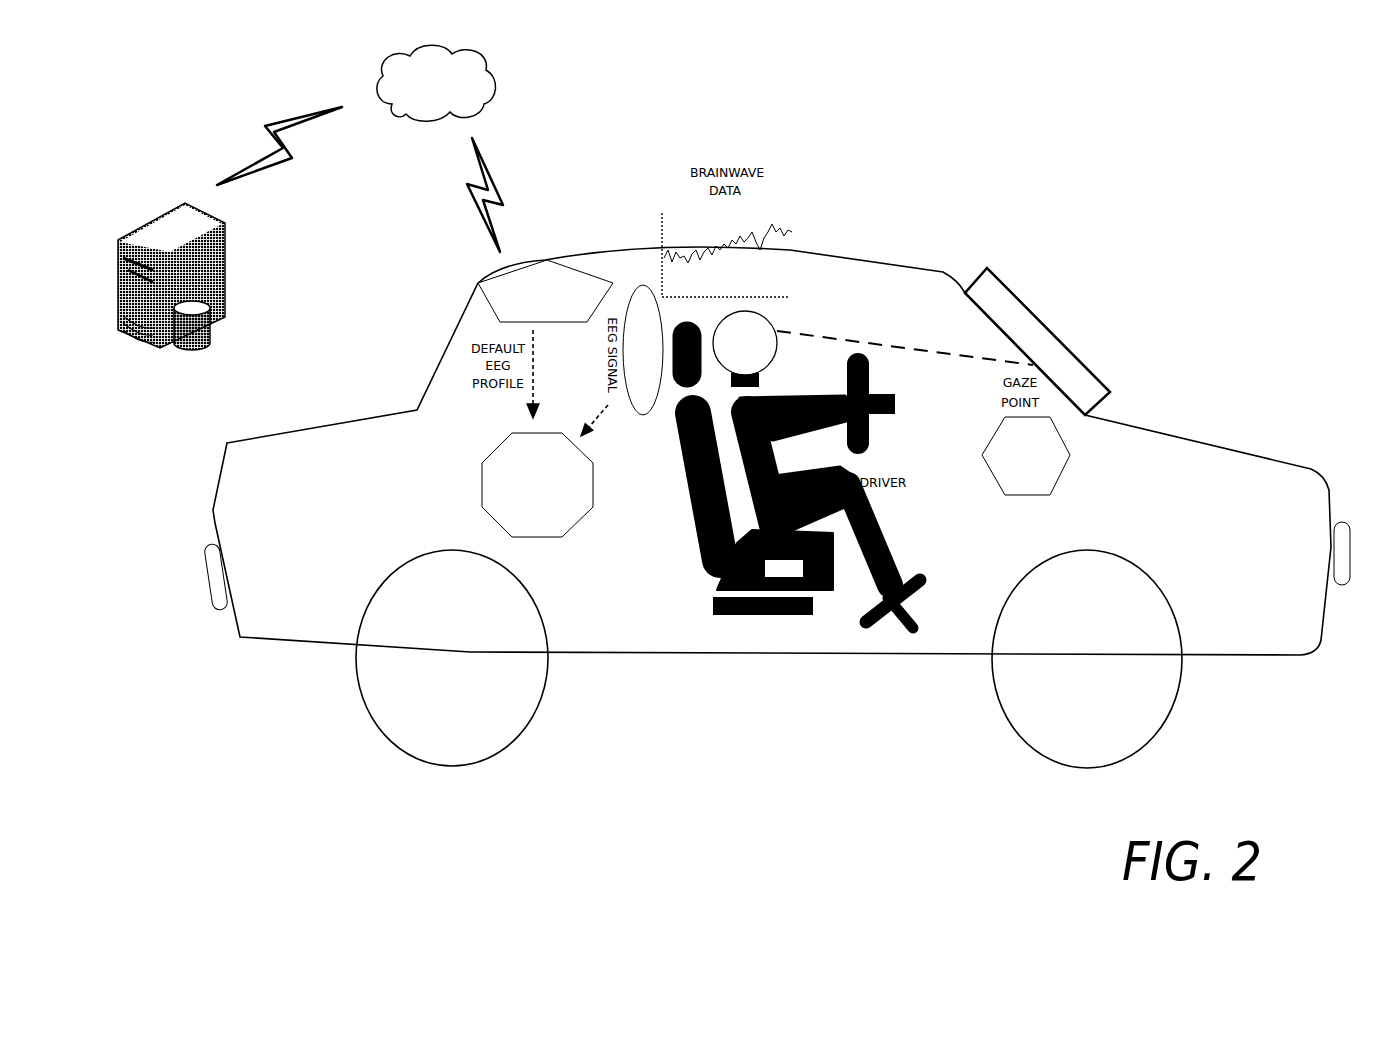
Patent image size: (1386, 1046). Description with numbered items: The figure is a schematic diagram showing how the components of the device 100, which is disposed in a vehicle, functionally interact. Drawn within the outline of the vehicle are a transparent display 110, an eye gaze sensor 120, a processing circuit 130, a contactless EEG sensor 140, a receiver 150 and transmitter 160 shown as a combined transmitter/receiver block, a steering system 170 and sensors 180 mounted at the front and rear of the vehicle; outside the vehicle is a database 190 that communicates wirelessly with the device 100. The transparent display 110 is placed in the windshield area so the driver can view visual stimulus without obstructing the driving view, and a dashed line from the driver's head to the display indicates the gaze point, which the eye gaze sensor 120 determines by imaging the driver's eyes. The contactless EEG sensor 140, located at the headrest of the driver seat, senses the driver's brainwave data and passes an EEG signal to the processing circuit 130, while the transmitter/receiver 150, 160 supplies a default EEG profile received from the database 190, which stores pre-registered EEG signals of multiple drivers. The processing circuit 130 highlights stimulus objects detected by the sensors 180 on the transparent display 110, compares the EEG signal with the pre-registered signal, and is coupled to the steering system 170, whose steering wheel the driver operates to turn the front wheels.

The device 100 is at (620, 657).
The transparent display 110 is at (1052, 330).
The eye gaze sensor 120 is at (1070, 455).
The processing circuitry 130 is at (480, 487).
The EEG sensor 140 is at (643, 415).
The receiver 150 is at (542, 260).
The transmitter 160 is at (547, 241).
The steering system 170 is at (937, 430).
The sensors 180 is at (210, 580).
The database 190 is at (140, 223).